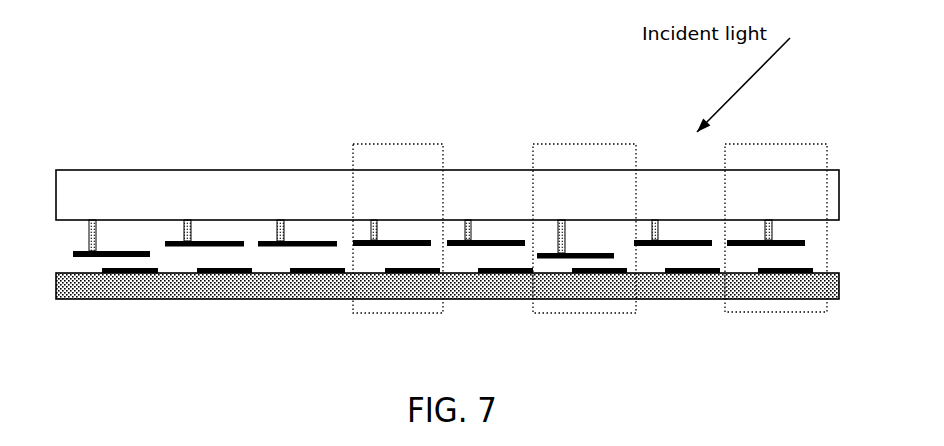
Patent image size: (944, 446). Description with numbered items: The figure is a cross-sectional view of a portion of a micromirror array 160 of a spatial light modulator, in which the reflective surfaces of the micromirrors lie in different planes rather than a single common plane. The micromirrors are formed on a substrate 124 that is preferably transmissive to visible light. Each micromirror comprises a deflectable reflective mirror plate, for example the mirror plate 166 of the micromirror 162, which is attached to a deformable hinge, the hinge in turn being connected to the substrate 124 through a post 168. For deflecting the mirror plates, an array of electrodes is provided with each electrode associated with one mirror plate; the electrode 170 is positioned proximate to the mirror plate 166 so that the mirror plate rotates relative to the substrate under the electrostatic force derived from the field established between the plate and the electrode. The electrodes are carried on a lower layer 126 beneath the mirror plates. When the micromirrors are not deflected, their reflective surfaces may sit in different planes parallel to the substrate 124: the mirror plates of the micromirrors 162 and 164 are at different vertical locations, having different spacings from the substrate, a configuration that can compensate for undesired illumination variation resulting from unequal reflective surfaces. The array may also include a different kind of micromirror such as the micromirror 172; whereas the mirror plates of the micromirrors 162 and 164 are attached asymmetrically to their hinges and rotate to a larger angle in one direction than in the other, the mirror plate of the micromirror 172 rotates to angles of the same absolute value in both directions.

The micromirror array 160 is at (268, 110).
The substrate 124 is at (185, 169).
The substrate / backplate 126 is at (185, 300).
The micromirror 162 is at (405, 145).
The micromirror 164 is at (605, 145).
The micromirror 172 is at (772, 143).
The mirror plate 166 is at (422, 240).
The post 168 is at (376, 237).
The electrode 170 is at (420, 275).